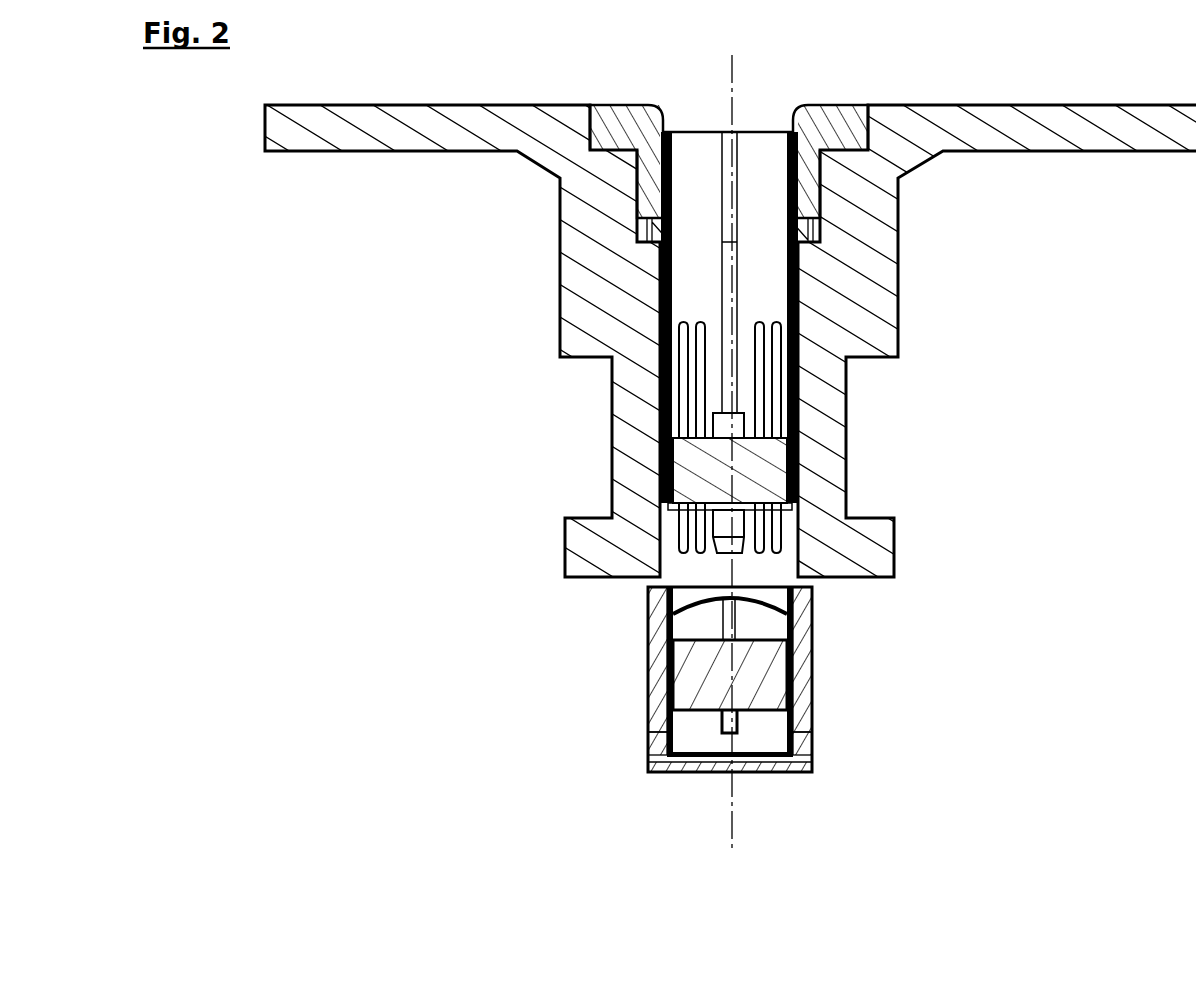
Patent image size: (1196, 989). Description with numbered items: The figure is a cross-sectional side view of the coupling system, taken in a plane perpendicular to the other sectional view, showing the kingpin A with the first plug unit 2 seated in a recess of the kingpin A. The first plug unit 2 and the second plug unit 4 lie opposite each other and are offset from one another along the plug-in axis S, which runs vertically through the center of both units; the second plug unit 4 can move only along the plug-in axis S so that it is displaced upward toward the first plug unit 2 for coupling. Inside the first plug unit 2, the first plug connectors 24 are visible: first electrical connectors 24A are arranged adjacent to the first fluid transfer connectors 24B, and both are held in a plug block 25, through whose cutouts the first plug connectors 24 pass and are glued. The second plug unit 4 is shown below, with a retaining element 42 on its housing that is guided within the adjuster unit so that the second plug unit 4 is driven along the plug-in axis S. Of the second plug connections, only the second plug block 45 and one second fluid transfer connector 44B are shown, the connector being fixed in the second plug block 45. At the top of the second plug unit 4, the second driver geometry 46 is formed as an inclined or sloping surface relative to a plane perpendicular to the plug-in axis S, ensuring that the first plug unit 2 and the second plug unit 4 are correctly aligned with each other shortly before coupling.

The kingpin A is at (906, 277).
The first plug unit 2 is at (789, 522).
The first plug connectors 24 is at (927, 342).
The first electrical connectors 24A is at (773, 380).
The first fluid transfer connectors 24B is at (732, 330).
The plug block 25 is at (772, 467).
The second plug unit 4 is at (734, 729).
The retaining element 42 is at (660, 745).
The second fluid transfer connector 44B is at (738, 722).
The second plug block 45 is at (710, 688).
The second driver geometry 46 is at (700, 609).
The plug-in axis S is at (735, 813).